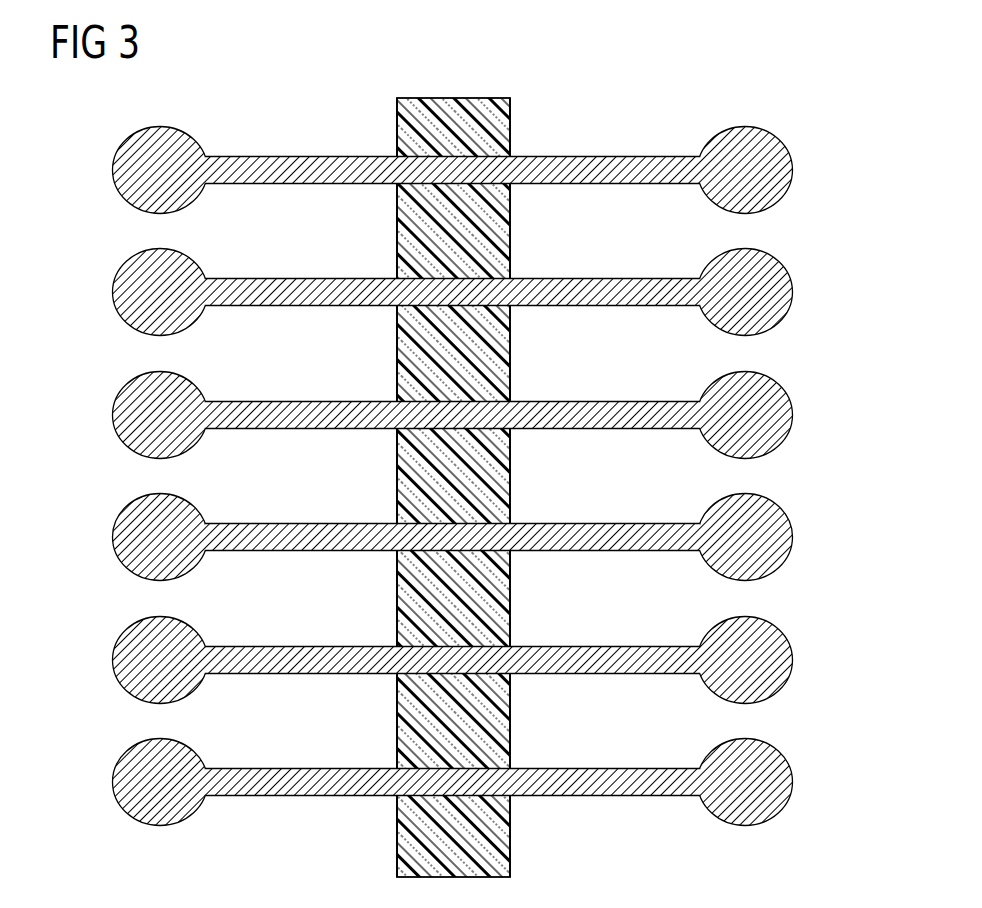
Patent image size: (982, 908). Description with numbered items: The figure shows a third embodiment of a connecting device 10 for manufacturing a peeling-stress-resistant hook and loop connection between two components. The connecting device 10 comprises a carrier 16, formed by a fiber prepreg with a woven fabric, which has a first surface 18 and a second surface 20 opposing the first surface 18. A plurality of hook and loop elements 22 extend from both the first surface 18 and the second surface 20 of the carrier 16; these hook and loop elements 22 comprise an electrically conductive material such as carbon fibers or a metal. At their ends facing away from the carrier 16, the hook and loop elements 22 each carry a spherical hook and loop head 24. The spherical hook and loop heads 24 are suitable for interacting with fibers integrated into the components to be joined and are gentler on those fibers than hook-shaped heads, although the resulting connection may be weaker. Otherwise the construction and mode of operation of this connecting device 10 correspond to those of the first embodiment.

The connecting device 10 is at (797, 88).
The carrier 16 is at (458, 110).
The first surface 18 is at (397, 342).
The second surface 20 is at (510, 333).
The hook and loop elements 22 is at (593, 292).
The hook and loop head 24 is at (113, 170).